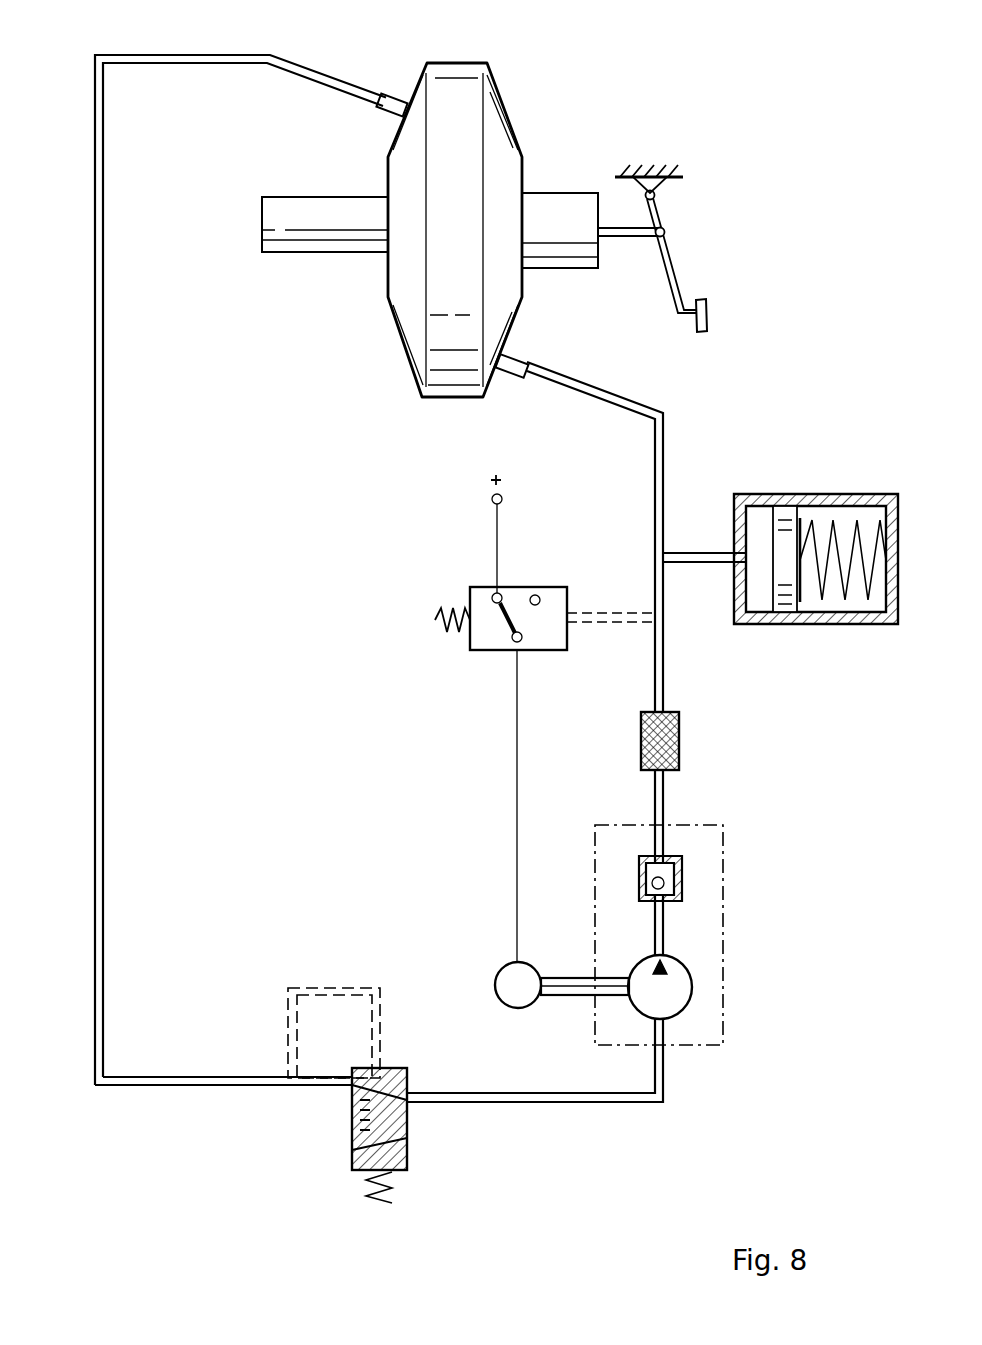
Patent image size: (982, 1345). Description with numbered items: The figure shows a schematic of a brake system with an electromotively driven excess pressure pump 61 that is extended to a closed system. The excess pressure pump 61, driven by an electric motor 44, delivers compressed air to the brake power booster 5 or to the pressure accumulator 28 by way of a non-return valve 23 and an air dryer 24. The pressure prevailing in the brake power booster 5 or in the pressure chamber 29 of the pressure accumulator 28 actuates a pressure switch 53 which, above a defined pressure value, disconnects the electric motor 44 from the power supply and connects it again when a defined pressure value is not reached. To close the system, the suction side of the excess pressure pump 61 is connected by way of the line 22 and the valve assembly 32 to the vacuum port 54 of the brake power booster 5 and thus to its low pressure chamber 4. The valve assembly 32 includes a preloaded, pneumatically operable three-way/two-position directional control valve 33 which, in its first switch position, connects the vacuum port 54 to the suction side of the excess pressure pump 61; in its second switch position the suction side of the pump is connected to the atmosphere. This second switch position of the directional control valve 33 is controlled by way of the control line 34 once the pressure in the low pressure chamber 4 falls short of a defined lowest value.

The low pressure chamber 4 is at (395, 185).
The brake power booster 5 is at (510, 84).
The vacuum port 54 is at (393, 97).
The pressure switch 53 is at (553, 595).
The pressure accumulator 28 is at (831, 490).
The pressure chamber 29 is at (757, 525).
The air dryer 24 is at (679, 740).
The non-return valve 23 is at (682, 878).
The electric motor 44 is at (495, 985).
The excess pressure pump 61 is at (692, 990).
The line 22 is at (630, 1100).
The control line 34 is at (330, 988).
The three-way/two-position directional control valve 33 is at (352, 1115).
The valve assembly 32 is at (350, 1160).